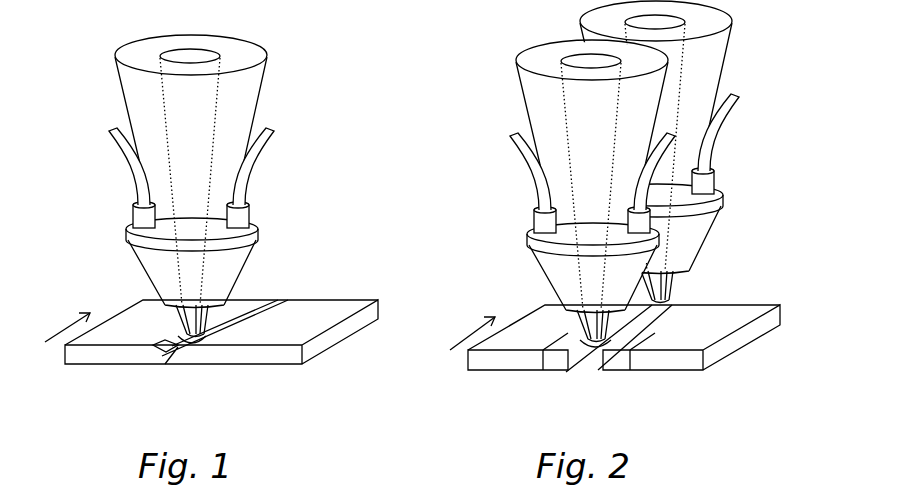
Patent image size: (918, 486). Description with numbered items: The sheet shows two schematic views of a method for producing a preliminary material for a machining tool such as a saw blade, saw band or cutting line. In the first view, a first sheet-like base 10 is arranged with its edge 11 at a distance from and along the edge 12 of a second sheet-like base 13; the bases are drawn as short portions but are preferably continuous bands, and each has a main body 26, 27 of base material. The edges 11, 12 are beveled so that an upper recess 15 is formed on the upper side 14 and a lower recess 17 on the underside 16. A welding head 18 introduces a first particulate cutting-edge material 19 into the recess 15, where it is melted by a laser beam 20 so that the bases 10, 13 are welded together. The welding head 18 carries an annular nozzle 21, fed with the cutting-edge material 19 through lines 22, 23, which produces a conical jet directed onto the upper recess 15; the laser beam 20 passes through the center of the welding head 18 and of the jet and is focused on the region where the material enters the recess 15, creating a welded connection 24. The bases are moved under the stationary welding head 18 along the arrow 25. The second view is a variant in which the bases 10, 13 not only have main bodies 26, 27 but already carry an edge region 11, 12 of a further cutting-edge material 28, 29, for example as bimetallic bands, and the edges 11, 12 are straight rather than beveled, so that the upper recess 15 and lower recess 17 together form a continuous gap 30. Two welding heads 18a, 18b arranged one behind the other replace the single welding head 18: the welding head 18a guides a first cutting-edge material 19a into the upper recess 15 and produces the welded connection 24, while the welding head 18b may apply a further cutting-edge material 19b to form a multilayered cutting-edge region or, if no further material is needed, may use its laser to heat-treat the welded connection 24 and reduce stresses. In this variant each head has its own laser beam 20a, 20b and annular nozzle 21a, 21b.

In FIG. 1, the first sheet-like base 10 is at (122, 325).
In FIG. 2, the first sheet-like base 10 is at (525, 327).
In FIG. 1, the edge of first base 11 is at (162, 365).
In FIG. 2, the edge of first base 11 is at (540, 363).
In FIG. 1, the edge of second base 12 is at (197, 355).
In FIG. 2, the edge of second base 12 is at (612, 362).
In FIG. 1, the second sheet-like base 13 is at (345, 305).
In FIG. 2, the second sheet-like base 13 is at (713, 325).
In FIG. 1, the upper side 14 is at (316, 262).
In FIG. 2, the upper side 14 is at (748, 312).
In FIG. 1, the upper recess 15 is at (158, 322).
In FIG. 2, the upper recess 15 is at (500, 360).
In FIG. 1, the underside 16 is at (258, 378).
In FIG. 2, the underside 16 is at (758, 346).
In FIG. 1, the lower recess 17 is at (180, 368).
In FIG. 2, the lower recess 17 is at (565, 365).
In FIG. 1, the welding head 18 is at (88, 95).
In FIG. 2, the first welding head 18a is at (486, 98).
In FIG. 2, the second welding head 18b is at (758, 62).
In FIG. 1, the first particulate cutting-edge material 19 is at (238, 303).
In FIG. 2, the first cutting-edge material 19a is at (640, 345).
In FIG. 2, the further cutting-edge material 19b is at (690, 285).
In FIG. 1, the laser beam 20 is at (200, 56).
In FIG. 2, the first electrode 20a is at (577, 330).
In FIG. 2, the second electrode 20b is at (658, 292).
In FIG. 1, the annular nozzle 21 is at (240, 246).
In FIG. 2, the first gas nozzle 21a is at (545, 258).
In FIG. 2, the second gas nozzle 21b is at (716, 200).
In FIG. 1, the line 22 is at (135, 172).
In FIG. 1, the line 23 is at (248, 167).
In FIG. 1, the welded connection 24 is at (262, 305).
In FIG. 2, the welded connection 24 is at (702, 300).
In FIG. 1, the arrow 25 is at (62, 334).
In FIG. 2, the arrow 25 is at (468, 336).
In FIG. 1, the main body of first base 26 is at (100, 357).
In FIG. 2, the main body of first base 26 is at (475, 355).
In FIG. 1, the main body of second base 27 is at (318, 350).
In FIG. 2, the main body of second base 27 is at (722, 340).
In FIG. 2, the further cutting-edge material of first base 28 is at (557, 375).
In FIG. 2, the further cutting-edge material of second base 29 is at (648, 333).
In FIG. 2, the continuous gap 30 is at (590, 375).